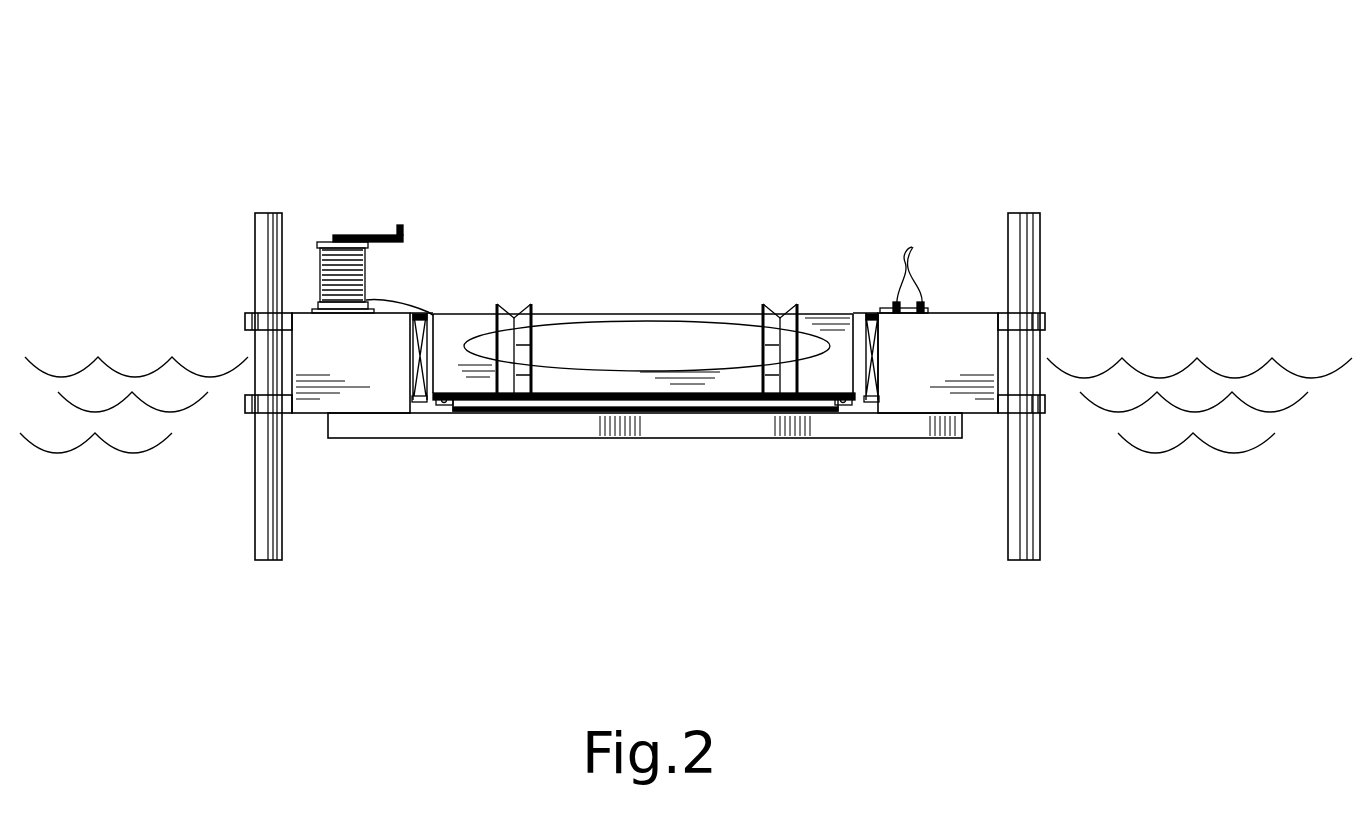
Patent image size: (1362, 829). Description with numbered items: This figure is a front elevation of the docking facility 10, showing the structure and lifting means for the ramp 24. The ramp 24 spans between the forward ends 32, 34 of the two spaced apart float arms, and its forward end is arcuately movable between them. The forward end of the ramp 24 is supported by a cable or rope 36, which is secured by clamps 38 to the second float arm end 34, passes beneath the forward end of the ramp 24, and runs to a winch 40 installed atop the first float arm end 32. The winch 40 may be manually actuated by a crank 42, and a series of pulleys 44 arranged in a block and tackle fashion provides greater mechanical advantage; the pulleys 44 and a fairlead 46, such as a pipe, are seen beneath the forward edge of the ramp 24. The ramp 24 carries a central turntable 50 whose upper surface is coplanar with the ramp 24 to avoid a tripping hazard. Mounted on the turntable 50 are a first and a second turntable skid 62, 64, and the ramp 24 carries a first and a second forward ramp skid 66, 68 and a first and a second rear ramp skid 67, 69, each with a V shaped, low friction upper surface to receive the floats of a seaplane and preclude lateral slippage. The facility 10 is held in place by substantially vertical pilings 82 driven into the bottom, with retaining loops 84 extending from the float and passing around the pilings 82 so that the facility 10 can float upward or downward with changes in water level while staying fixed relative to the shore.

The docking facility 10 is at (697, 156).
The ramp 24 is at (645, 330).
The first float arm forward end 32 is at (368, 368).
The second float arm forward end 34 is at (961, 368).
The cable 36 is at (440, 358).
The clamps 38 is at (915, 269).
The winch 40 is at (358, 270).
The crank 42 is at (358, 236).
The pulleys 44 is at (871, 316).
The fairlead 46 is at (660, 405).
The turntable 50 is at (672, 358).
The first turntable skid 62 is at (527, 345).
The second turntable skid 64 is at (780, 342).
The first forward ramp skid 66 is at (560, 400).
The first rear ramp skid 67 is at (508, 302).
The second forward ramp skid 68 is at (838, 402).
The second rear ramp skid 69 is at (783, 305).
The pilings 82 is at (252, 516).
The retaining loops 84 is at (246, 405).